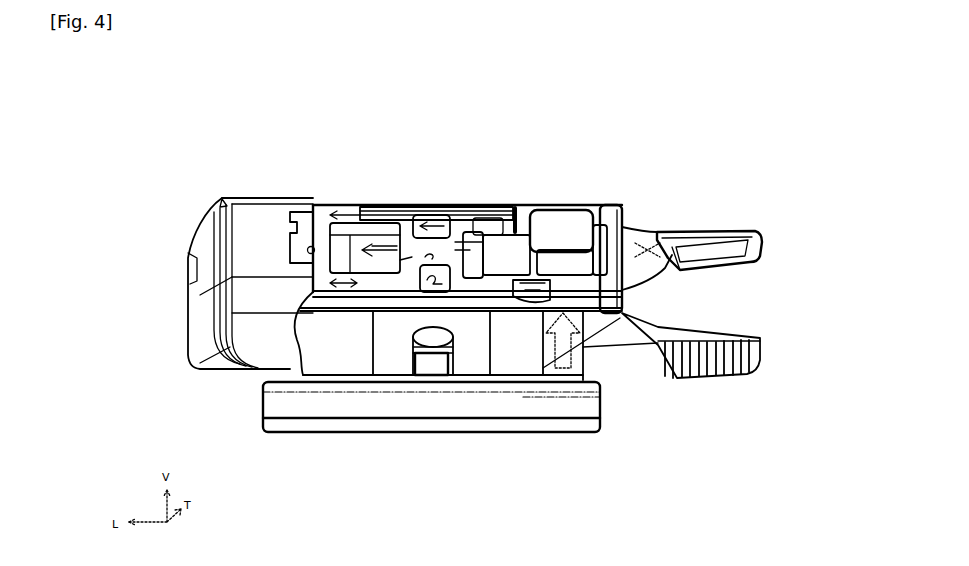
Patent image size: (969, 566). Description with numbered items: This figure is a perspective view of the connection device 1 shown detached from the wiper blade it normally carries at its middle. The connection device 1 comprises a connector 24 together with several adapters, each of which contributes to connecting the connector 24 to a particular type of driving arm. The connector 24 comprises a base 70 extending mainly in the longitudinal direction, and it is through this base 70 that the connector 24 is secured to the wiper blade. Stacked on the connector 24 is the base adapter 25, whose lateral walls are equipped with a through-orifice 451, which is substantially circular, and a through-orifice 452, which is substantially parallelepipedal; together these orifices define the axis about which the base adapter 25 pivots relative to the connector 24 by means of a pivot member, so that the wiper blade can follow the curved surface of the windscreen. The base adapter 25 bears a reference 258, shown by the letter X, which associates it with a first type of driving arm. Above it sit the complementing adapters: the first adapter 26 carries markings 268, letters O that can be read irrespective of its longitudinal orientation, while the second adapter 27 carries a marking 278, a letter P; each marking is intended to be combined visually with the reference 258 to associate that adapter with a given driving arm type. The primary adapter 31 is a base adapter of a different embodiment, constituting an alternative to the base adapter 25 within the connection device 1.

The connection device 1 is at (771, 148).
The connector 24 is at (603, 402).
The base adapter 25 is at (198, 367).
The first adapter 26 is at (420, 203).
The second adapter 27 is at (323, 197).
The primary adapter 31 is at (372, 385).
The base 70 is at (573, 423).
The reference 258 is at (663, 277).
The markings 268 is at (473, 203).
The marking 278 is at (450, 245).
The through-orifice 451 is at (413, 377).
The through-orifice 452 is at (527, 205).